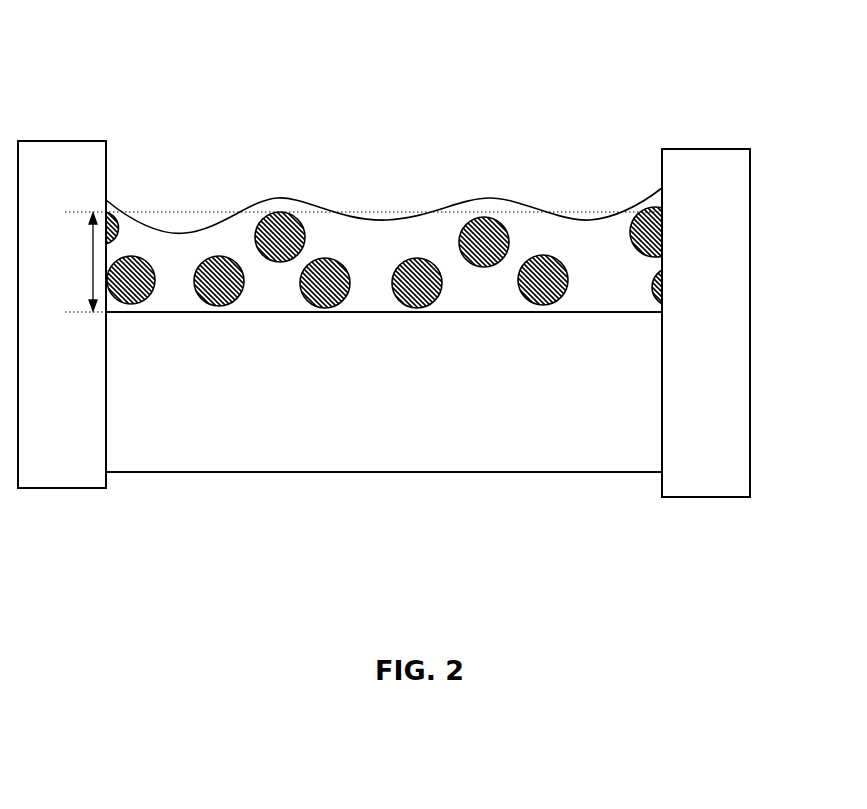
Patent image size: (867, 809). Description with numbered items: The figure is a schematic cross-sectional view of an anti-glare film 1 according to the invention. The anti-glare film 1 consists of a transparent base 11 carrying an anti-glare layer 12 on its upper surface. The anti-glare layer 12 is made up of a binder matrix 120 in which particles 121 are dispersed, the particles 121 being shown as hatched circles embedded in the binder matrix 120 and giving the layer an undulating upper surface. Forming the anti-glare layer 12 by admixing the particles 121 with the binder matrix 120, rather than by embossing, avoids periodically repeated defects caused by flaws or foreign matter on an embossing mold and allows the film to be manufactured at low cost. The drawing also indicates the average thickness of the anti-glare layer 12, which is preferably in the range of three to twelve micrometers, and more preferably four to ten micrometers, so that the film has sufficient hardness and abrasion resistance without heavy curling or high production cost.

The anti-glare film 1 is at (478, 118).
The transparent base 11 is at (664, 312).
The anti-glare layer 12 is at (664, 188).
The binder matrix 120 is at (563, 237).
The particles 121 is at (283, 230).